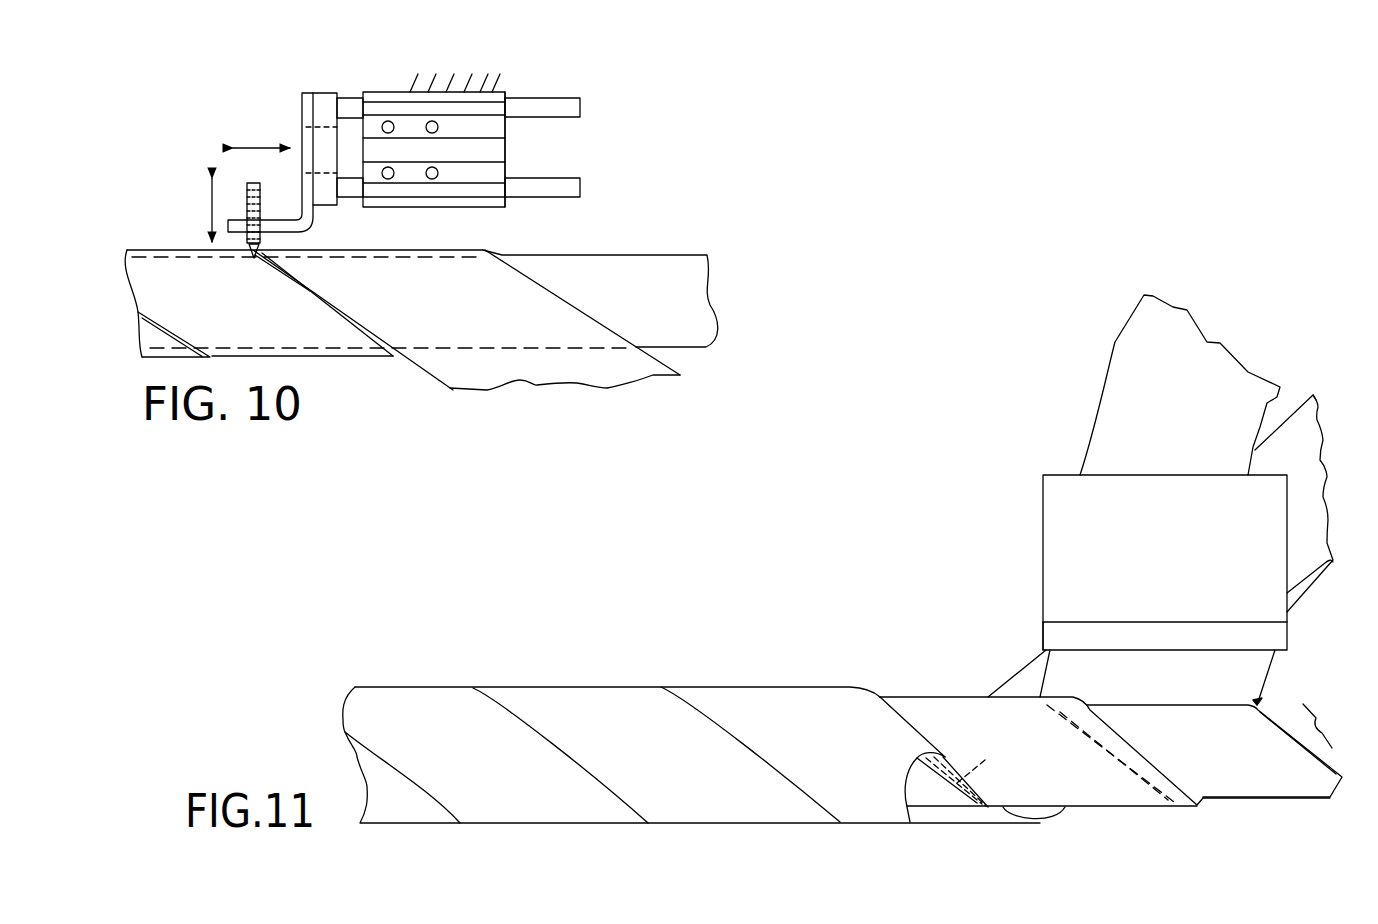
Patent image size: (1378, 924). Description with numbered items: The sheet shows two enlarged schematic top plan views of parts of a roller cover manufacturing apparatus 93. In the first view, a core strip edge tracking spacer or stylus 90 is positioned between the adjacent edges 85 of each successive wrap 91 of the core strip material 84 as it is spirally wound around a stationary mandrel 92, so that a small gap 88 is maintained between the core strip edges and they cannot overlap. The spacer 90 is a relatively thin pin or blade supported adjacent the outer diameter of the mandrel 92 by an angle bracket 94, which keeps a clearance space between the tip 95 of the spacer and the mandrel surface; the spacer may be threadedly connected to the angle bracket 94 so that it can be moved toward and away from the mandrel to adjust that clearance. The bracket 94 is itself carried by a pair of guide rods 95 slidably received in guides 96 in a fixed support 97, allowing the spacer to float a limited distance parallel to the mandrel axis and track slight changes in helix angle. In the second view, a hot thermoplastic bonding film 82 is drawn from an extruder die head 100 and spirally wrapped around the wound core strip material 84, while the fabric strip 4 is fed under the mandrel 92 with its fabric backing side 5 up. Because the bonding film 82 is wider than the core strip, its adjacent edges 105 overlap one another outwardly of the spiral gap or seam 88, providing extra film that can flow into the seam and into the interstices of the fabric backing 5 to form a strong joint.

In FIG. 11, the fabric strip material 4 is at (798, 695).
In FIG. 11, the fabric backing side 5 is at (1310, 483).
In FIG. 11, the hot thermoplastic bonding film 82 is at (943, 705).
In FIG. 10, the core strip material 84 is at (632, 364).
In FIG. 11, the core strip material 84 is at (1277, 790).
In FIG. 10, the adjacent edges of the core strip material 85 is at (311, 287).
In FIG. 10, the gap 88 is at (324, 306).
In FIG. 11, the gap 88 is at (958, 810).
In FIG. 10, the core strip edge tracking spacer 90 is at (246, 194).
In FIG. 10, the wrap of the core strip material 91 is at (491, 277).
In FIG. 10, the stationary mandrel 92 is at (668, 277).
In FIG. 11, the stationary mandrel 92 is at (1303, 742).
In FIG. 10, the roller cover manufacturing apparatus 93 is at (580, 90).
In FIG. 11, the roller cover manufacturing apparatus 93 is at (1037, 462).
In FIG. 10, the angle bracket 94 is at (309, 108).
In FIG. 10, the tip of the spacer / guide rods 95 is at (575, 110).
In FIG. 10, the guides 96 is at (397, 101).
In FIG. 10, the fixed support 97 is at (477, 91).
In FIG. 11, the extruder die head 100 is at (1058, 537).
In FIG. 11, the adjacent edges of the bonding film 105 is at (1050, 665).